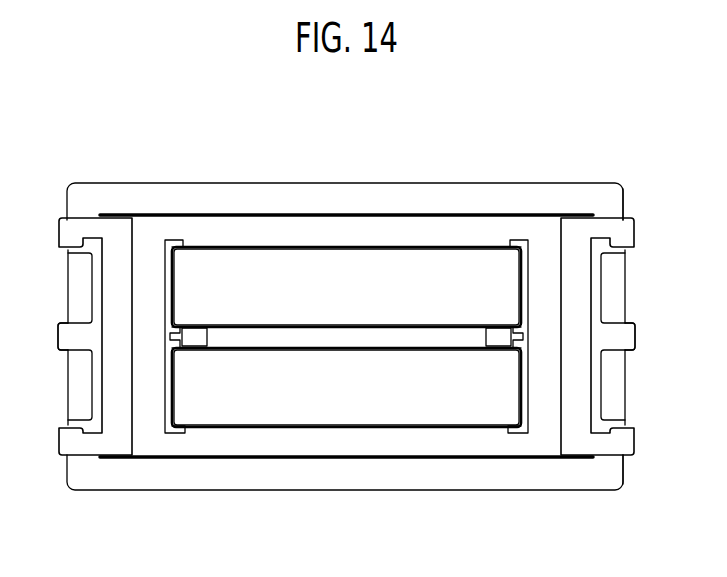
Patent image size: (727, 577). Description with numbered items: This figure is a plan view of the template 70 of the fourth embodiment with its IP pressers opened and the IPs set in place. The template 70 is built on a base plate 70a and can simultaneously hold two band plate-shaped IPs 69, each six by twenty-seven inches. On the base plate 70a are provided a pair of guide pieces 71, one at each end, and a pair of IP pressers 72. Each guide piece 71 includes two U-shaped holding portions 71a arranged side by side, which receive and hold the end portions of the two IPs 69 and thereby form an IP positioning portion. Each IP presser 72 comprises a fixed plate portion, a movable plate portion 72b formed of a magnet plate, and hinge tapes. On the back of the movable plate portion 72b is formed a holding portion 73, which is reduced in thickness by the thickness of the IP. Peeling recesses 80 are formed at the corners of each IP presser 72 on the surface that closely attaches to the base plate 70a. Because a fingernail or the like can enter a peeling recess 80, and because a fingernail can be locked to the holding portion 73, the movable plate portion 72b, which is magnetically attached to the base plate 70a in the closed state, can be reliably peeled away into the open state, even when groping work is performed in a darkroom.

The IP 69 is at (383, 247).
The template 70 is at (335, 182).
The base plate 70a is at (255, 238).
The guide piece 71 is at (173, 433).
The U-shaped holding portion 71a is at (174, 289).
The IP presser 72 is at (82, 213).
The movable plate portion 72b is at (62, 325).
The holding portion 73 is at (93, 275).
The peeling recess 80 is at (630, 223).